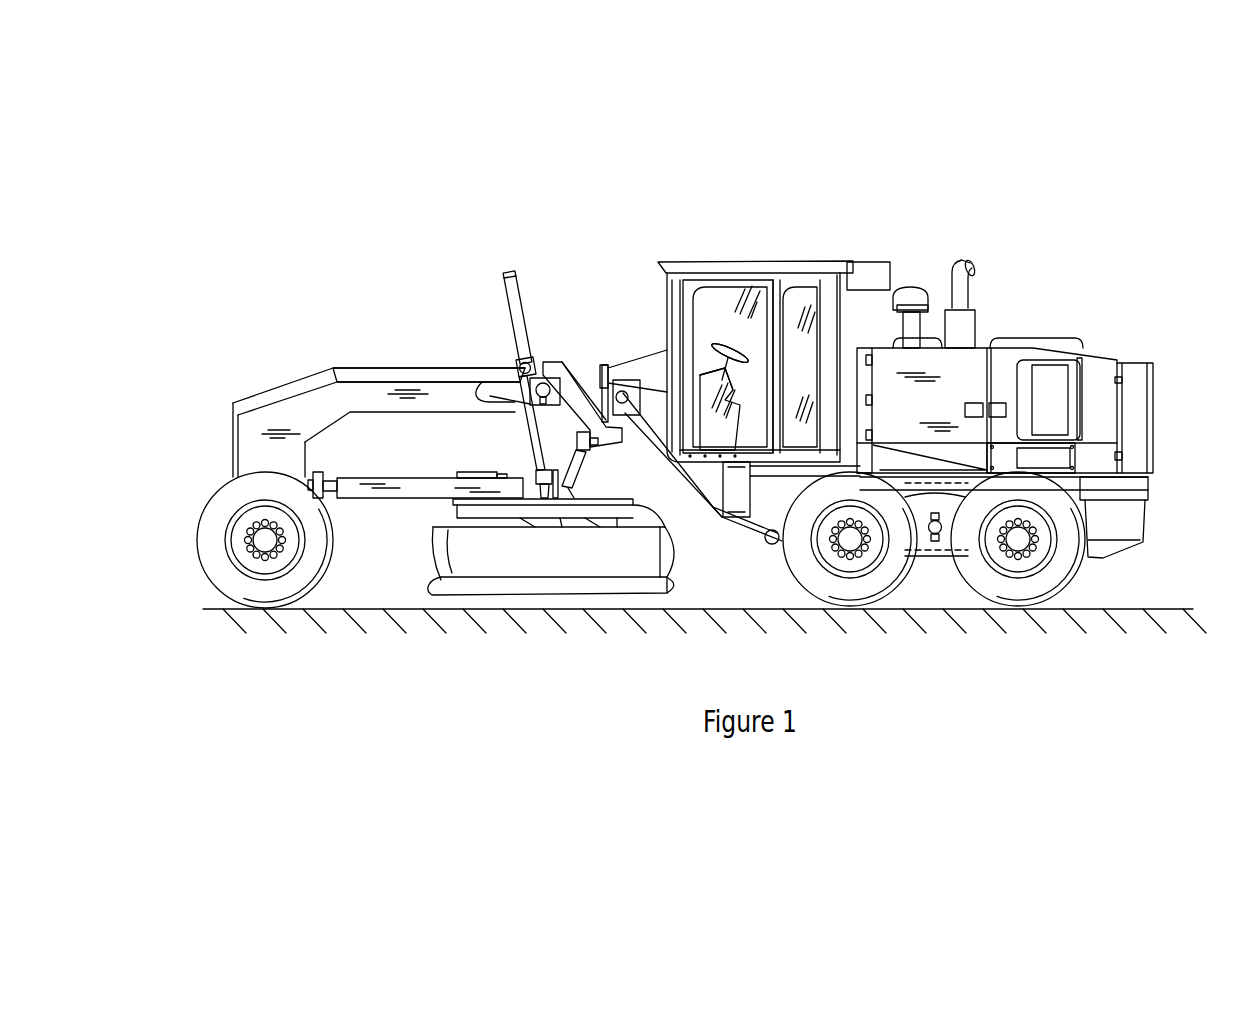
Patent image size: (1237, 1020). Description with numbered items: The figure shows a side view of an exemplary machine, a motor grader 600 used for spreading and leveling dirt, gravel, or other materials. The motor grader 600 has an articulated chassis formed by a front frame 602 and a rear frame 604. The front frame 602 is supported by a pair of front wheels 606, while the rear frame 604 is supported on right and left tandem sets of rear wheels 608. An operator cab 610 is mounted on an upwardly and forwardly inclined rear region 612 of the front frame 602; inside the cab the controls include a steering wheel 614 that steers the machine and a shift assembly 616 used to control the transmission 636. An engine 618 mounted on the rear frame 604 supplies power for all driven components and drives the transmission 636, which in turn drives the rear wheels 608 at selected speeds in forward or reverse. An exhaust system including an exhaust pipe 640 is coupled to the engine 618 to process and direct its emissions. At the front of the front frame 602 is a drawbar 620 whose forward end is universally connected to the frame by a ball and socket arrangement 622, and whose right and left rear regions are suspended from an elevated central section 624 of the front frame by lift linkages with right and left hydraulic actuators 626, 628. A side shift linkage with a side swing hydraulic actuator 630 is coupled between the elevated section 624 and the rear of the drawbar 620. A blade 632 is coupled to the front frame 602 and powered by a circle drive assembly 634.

The motor grader 600 is at (1013, 180).
The front frame 602 is at (298, 368).
The rear frame 604 is at (1120, 555).
The front wheels 606 is at (255, 597).
The rear wheels 608 is at (838, 594).
The operator cab 610 is at (811, 252).
The rear region of the front frame 612 is at (688, 510).
The steering wheel 614 is at (720, 445).
The shift assembly 616 is at (707, 347).
The engine 618 is at (997, 372).
The drawbar 620 is at (415, 480).
The ball and socket arrangement 622 is at (332, 496).
The elevated central section of the front frame 624 is at (380, 368).
The right hydraulic actuator 626 is at (512, 330).
The left hydraulic actuator 628 is at (504, 292).
The side swing hydraulic actuator 630 is at (586, 466).
The blade 632 is at (437, 582).
The circle drive assembly 634 is at (483, 470).
The transmission 636 is at (937, 553).
The exhaust pipe 640 is at (982, 270).